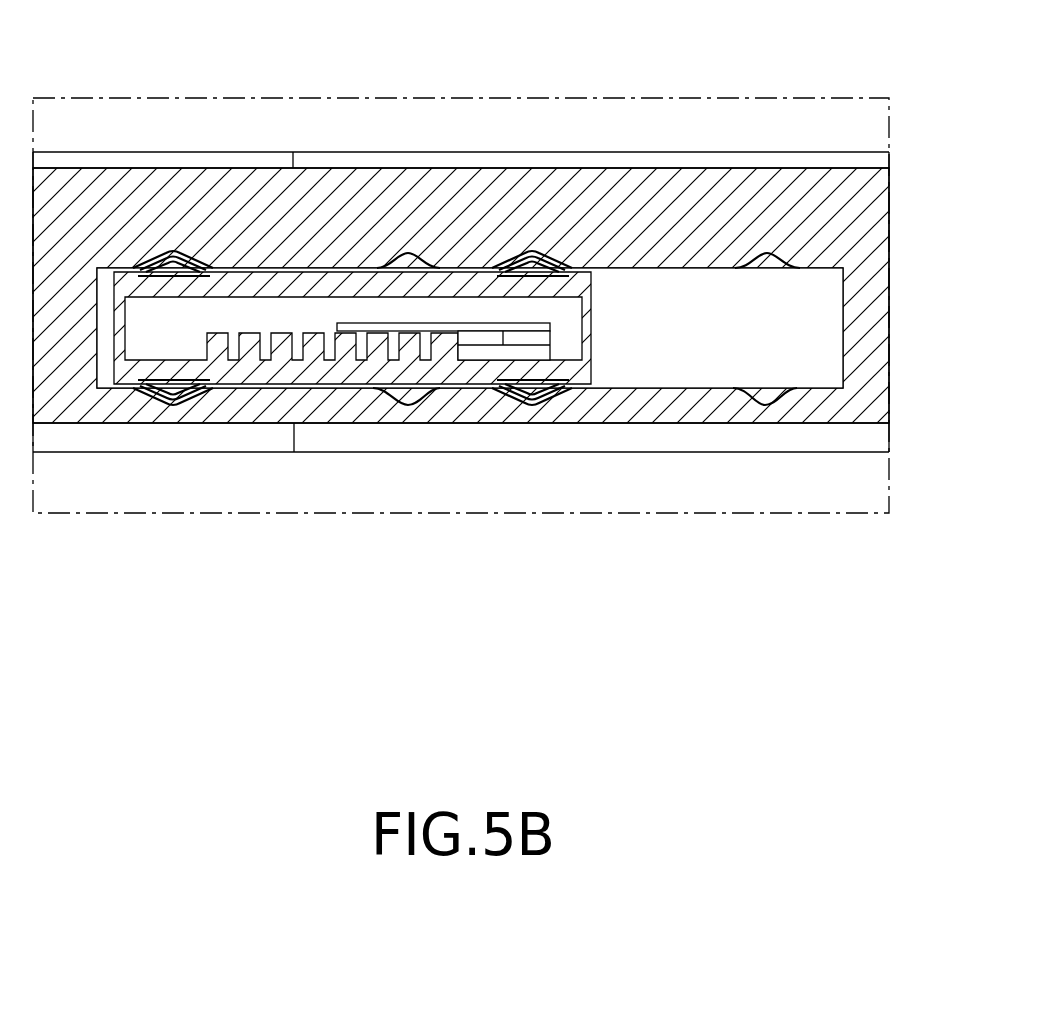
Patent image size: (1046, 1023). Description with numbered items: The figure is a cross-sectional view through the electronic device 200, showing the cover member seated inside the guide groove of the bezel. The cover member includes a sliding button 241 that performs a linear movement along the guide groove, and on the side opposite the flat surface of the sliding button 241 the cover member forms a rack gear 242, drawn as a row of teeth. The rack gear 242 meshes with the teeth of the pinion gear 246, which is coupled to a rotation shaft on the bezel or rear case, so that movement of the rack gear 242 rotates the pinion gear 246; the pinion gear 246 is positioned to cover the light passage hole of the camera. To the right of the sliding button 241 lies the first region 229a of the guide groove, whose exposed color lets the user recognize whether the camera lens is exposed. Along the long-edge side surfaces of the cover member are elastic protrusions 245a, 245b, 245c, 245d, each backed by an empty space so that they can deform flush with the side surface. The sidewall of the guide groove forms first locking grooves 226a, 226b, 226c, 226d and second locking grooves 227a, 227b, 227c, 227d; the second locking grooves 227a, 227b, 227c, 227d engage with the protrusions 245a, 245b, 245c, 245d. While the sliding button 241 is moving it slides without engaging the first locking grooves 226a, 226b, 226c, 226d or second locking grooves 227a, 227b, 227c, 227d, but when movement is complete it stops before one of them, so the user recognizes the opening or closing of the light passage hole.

The electronic device 200 is at (828, 63).
The sliding button 241 is at (112, 374).
The rack gear 242 is at (288, 345).
The pinion gear 246 is at (478, 352).
The first region 229a is at (690, 355).
The first locking groove 226a is at (742, 395).
The first locking groove 226b is at (400, 403).
The first locking groove 226c is at (745, 262).
The first locking groove 226d is at (395, 262).
The second locking groove 227a is at (540, 395).
The second locking groove 227b is at (157, 393).
The second locking groove 227c is at (528, 262).
The second locking groove 227d is at (150, 265).
The protrusion 245a is at (573, 395).
The protrusion 245b is at (200, 393).
The protrusion 245c is at (575, 268).
The protrusion 245d is at (197, 268).